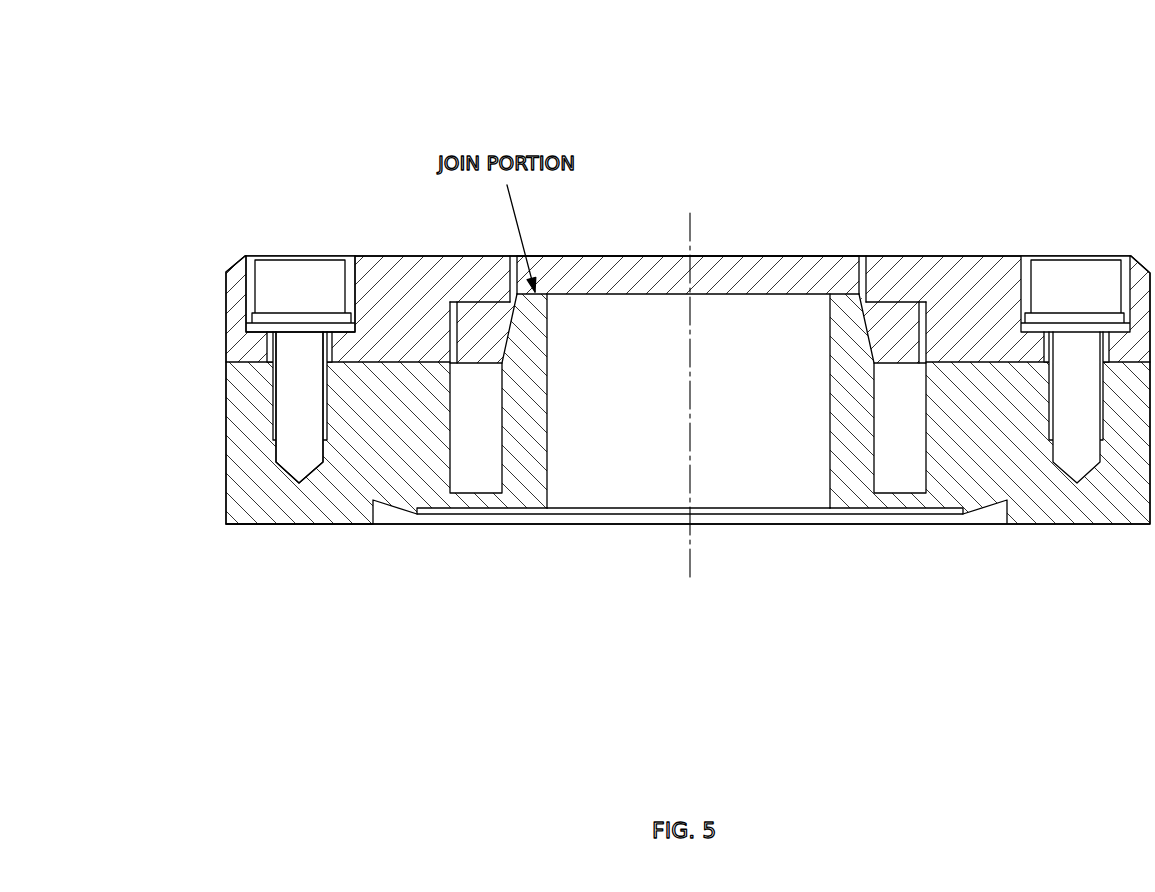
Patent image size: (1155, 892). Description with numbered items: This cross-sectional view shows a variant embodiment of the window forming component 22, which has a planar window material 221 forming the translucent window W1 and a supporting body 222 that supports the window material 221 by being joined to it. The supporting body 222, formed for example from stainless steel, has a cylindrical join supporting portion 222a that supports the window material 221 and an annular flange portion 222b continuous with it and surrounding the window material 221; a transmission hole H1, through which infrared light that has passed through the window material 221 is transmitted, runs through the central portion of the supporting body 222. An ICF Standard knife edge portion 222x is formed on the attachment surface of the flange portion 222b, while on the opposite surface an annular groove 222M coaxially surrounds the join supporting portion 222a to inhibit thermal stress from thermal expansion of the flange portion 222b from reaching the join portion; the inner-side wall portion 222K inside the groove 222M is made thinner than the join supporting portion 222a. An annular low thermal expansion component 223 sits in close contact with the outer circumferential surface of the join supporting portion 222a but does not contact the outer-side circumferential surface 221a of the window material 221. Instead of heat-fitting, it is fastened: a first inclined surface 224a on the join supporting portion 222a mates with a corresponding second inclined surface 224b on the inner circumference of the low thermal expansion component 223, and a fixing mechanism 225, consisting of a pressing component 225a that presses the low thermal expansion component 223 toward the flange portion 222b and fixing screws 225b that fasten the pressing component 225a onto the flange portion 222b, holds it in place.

The window forming component 22 is at (353, 110).
The window material 221 is at (615, 253).
The outer-side circumferential surface of the window material 221a is at (864, 277).
The translucent window W1 is at (749, 254).
The supporting body 222 is at (226, 441).
The join supporting portion 222a is at (548, 313).
The flange portion 222b is at (299, 524).
The knife edge portion 222x is at (412, 514).
The inner-side wall portion 222K is at (843, 432).
The groove 222M is at (908, 463).
The low thermal expansion component 223 is at (457, 333).
The first inclined surface 224a is at (515, 338).
The second inclined surface 224b is at (516, 326).
The fixing mechanism 225 is at (214, 156).
The pressing component 225a is at (227, 322).
The fixing screws 225b is at (300, 255).
The transmission hole H1 is at (641, 464).